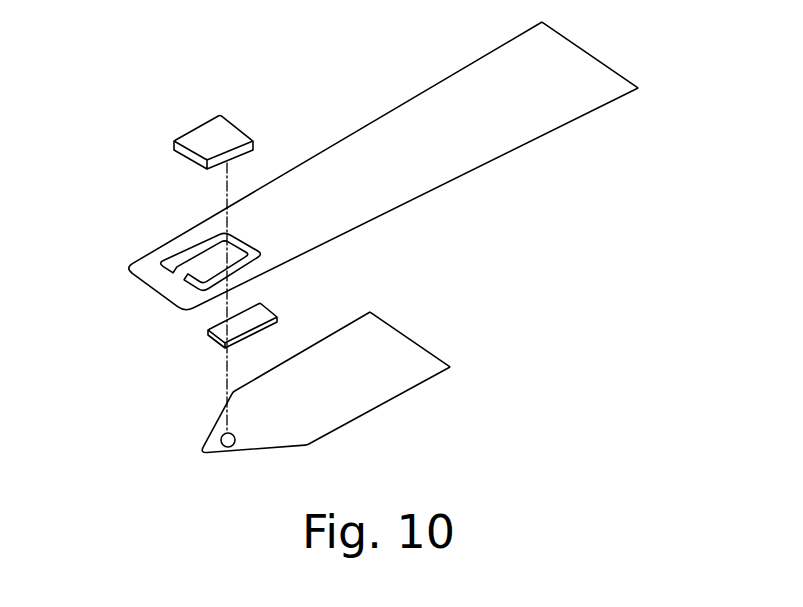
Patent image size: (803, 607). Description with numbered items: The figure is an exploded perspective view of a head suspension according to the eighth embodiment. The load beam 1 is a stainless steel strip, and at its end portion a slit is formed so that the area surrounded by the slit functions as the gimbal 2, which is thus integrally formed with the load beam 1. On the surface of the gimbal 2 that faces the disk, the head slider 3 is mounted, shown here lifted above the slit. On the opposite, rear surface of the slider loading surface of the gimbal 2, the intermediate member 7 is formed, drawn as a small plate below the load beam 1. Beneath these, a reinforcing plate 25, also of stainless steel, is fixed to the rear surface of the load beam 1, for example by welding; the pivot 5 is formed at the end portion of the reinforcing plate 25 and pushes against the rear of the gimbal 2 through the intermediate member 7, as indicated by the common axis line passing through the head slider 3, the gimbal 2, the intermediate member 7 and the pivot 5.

The load beam 1 is at (377, 143).
The gimbal 2 is at (192, 262).
The head slider 3 is at (227, 135).
The pivot 5 is at (223, 436).
The intermediate member 7 is at (265, 307).
The reinforcing plate 25 is at (390, 345).